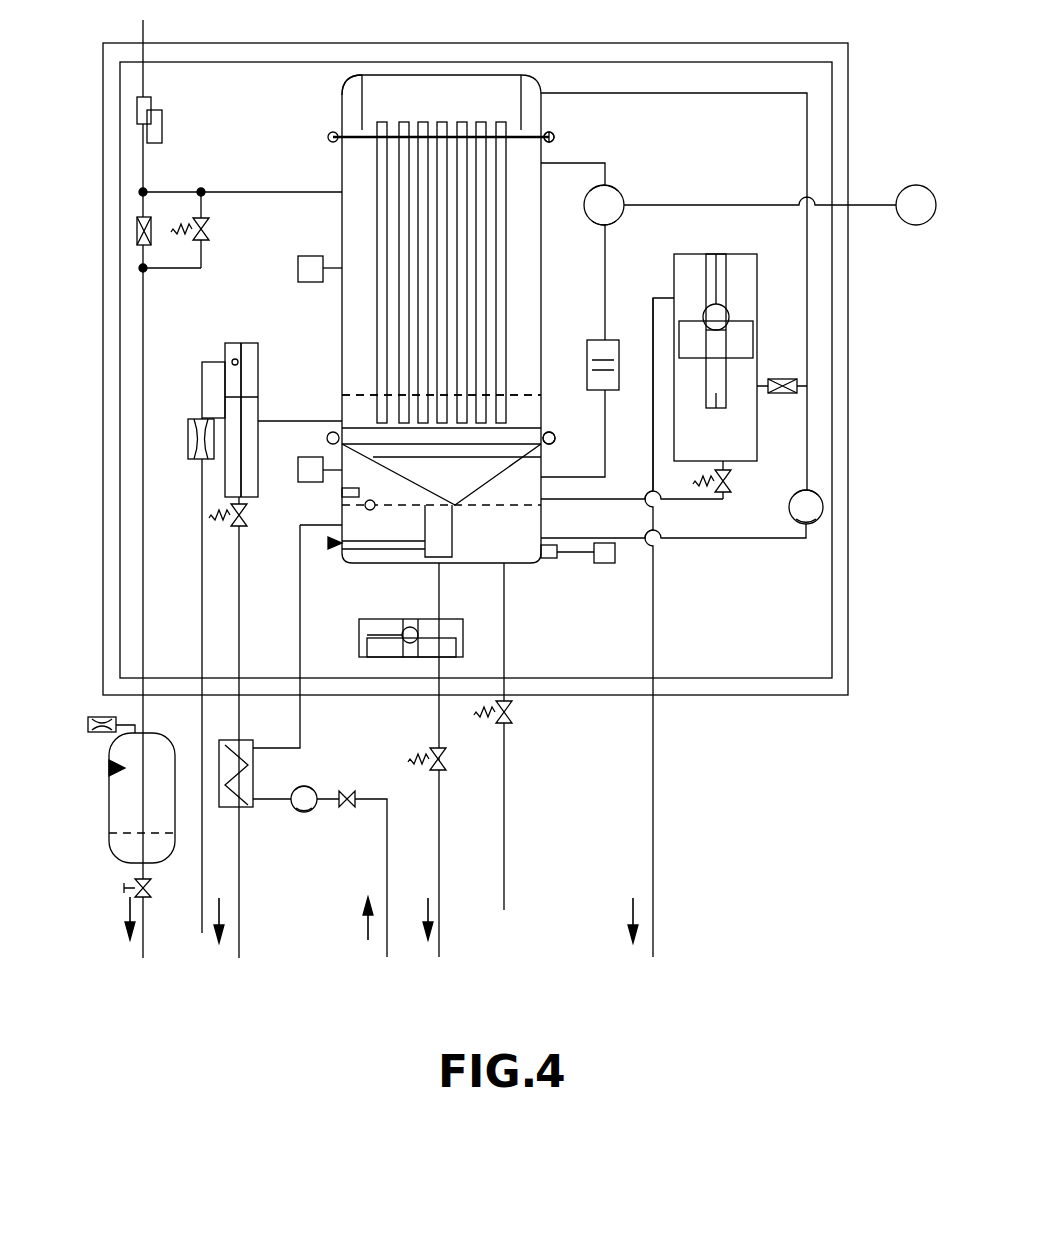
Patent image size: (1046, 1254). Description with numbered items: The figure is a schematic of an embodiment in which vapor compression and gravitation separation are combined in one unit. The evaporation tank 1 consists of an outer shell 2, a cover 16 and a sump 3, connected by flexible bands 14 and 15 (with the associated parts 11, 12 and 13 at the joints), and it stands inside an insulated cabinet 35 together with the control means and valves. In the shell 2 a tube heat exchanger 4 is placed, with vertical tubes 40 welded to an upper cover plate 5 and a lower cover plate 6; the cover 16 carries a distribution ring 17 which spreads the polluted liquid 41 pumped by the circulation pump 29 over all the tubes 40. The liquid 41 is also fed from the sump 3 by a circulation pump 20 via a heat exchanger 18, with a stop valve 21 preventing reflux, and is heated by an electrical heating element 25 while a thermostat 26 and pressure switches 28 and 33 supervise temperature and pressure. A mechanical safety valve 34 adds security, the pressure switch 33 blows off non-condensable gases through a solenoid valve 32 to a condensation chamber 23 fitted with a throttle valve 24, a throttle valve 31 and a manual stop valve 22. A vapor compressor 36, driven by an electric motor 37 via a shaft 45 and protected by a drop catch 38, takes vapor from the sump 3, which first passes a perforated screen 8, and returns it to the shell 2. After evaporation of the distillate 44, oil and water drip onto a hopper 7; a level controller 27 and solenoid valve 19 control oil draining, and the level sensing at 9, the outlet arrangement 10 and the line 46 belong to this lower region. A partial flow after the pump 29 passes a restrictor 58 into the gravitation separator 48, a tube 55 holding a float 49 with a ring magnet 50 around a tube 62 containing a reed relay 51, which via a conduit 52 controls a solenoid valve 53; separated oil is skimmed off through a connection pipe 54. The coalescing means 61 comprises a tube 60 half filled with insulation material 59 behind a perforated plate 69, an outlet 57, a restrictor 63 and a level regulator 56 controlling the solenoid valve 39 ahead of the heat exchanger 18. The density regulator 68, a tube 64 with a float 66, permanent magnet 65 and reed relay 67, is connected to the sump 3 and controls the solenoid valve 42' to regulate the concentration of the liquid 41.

The evaporation tank 1 is at (363, 313).
The outer shell 2 is at (541, 195).
The sump 3 is at (541, 466).
The tube heat exchanger 4 is at (450, 305).
The upper cover plate 5 is at (517, 136).
The lower cover plate 6 is at (528, 427).
The hopper 7 is at (490, 487).
The perforated screen 8 is at (440, 458).
The level sensor 9 is at (406, 504).
The outlet pipe 10 is at (430, 540).
The seal 11 is at (555, 138).
The gasket 12 is at (553, 133).
The lower seal 13 is at (556, 440).
The flexible band 14 is at (556, 434).
The flexible band 15 is at (557, 143).
The cover 16 is at (432, 75).
The distribution ring 17 is at (358, 93).
The heat exchanger 18 is at (243, 770).
The solenoid valve 19 is at (448, 759).
The circulation pump 20 is at (304, 812).
The stop valve 21 is at (347, 808).
The manual stop valve 22 is at (124, 888).
The condensation chamber 23 is at (109, 767).
The throttle valve 24 is at (88, 725).
The electrical heating element 25 is at (330, 543).
The thermostat 26 is at (547, 545).
The level controller 27 is at (342, 490).
The pressure switch 28 is at (298, 468).
The circulation pump 29 is at (826, 500).
The throttle valve 31 is at (137, 230).
The solenoid valve 32 is at (210, 229).
The pressure switch 33 is at (298, 266).
The mechanical safety valve 34 is at (137, 108).
The insulated cabinet 35 is at (106, 68).
The vapor compressor 36 is at (608, 214).
The electric motor 37 is at (916, 226).
The drop catch 38 is at (587, 378).
The solenoid valve 39 is at (233, 527).
The tubes 40 is at (500, 283).
The polluted liquid 41 is at (477, 535).
The solenoid valve 42' is at (521, 736).
The distillate 44 is at (350, 368).
The shaft 45 is at (868, 205).
The overflow line 46 is at (338, 509).
The gravitation separator 48 is at (730, 442).
The float 49 is at (740, 348).
The ring magnet 50 is at (729, 314).
The reed relay 51 is at (722, 329).
The conduit 52 is at (716, 258).
The solenoid valve 53 is at (733, 482).
The connection pipe 54 is at (653, 412).
The tube 55 is at (757, 420).
The level regulator 56 is at (225, 355).
The outlet 57 is at (230, 358).
The restrictor 58 is at (800, 393).
The insulation material 59 is at (246, 385).
The tube 60 is at (226, 412).
The coalescing means 61 is at (233, 363).
The tube 62 is at (718, 395).
The restrictor 63 is at (188, 438).
The tube 64 is at (367, 622).
The permanent magnet 65 is at (402, 637).
The float 66 is at (373, 652).
The reed relay 67 is at (405, 642).
The density regulator 68 is at (367, 628).
The perforated plate 69 is at (249, 396).